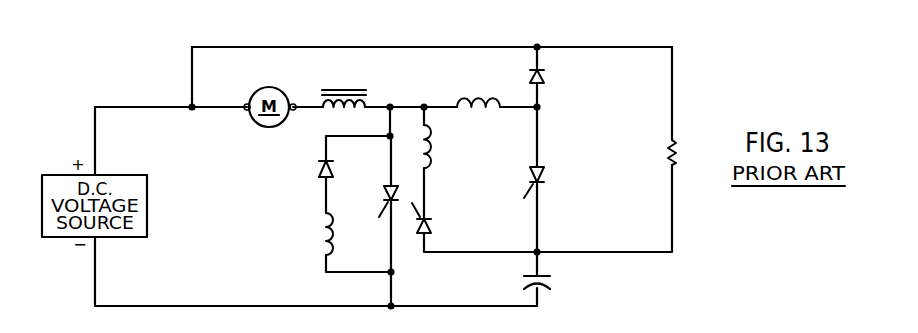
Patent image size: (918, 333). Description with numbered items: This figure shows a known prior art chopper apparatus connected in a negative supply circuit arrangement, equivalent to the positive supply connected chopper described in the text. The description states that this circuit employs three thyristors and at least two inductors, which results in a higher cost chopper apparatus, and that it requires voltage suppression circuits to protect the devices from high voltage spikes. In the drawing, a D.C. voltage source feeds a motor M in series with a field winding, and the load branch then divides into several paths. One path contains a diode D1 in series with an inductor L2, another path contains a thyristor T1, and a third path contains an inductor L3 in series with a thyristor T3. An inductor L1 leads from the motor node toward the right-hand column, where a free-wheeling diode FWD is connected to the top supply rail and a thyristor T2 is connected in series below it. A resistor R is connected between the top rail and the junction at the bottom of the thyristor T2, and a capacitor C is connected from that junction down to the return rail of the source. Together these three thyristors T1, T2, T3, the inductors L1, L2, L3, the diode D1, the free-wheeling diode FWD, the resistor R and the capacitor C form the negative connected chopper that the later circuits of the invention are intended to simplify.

The diode D1 is at (313, 172).
The thyristor T1 is at (383, 195).
The inductor L2 is at (320, 223).
The inductor L3 is at (433, 146).
The thyristor T3 is at (438, 222).
The inductor L1 is at (472, 110).
The free-wheeling diode FWD is at (548, 75).
The thyristor T2 is at (548, 175).
The resistor R is at (664, 147).
The commutating capacitor C is at (523, 278).